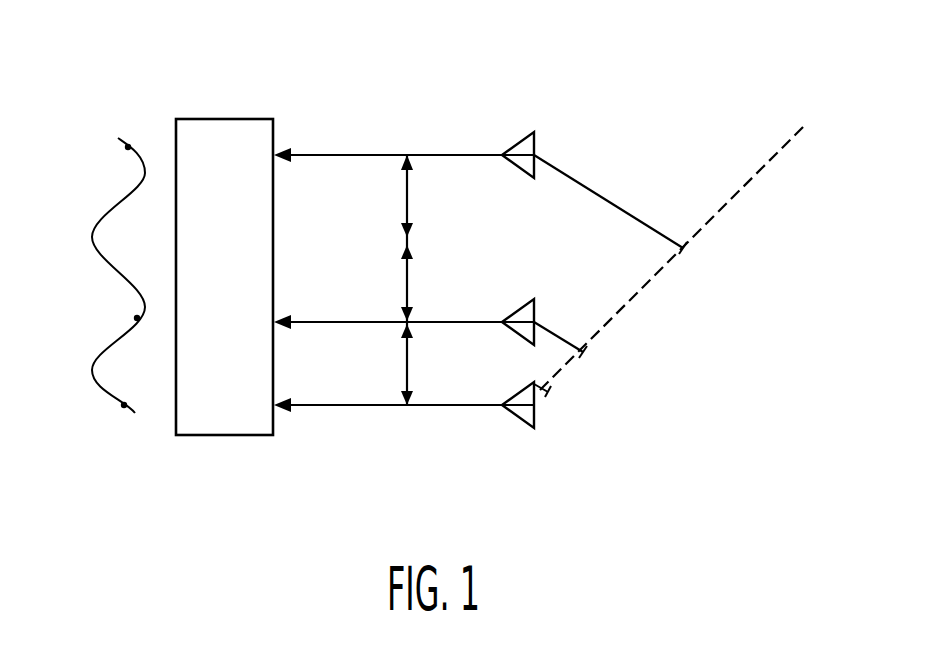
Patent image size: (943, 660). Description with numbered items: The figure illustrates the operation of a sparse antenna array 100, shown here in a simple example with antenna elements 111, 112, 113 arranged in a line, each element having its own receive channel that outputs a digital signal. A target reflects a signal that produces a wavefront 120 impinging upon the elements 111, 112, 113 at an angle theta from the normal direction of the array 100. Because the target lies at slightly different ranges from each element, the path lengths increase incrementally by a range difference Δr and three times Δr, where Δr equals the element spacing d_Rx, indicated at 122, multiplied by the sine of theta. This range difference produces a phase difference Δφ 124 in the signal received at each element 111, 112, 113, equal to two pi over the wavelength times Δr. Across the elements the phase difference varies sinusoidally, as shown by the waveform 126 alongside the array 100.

The sparse antenna array 100 is at (475, 78).
The phase difference Δφ 124 is at (210, 119).
The sinusoidal phase variation 126 is at (108, 338).
The receive antenna spacing d_rx 122 is at (405, 203).
The element 113 is at (520, 168).
The element 112 is at (518, 338).
The element 111 is at (522, 424).
The wavefront 120 is at (738, 198).